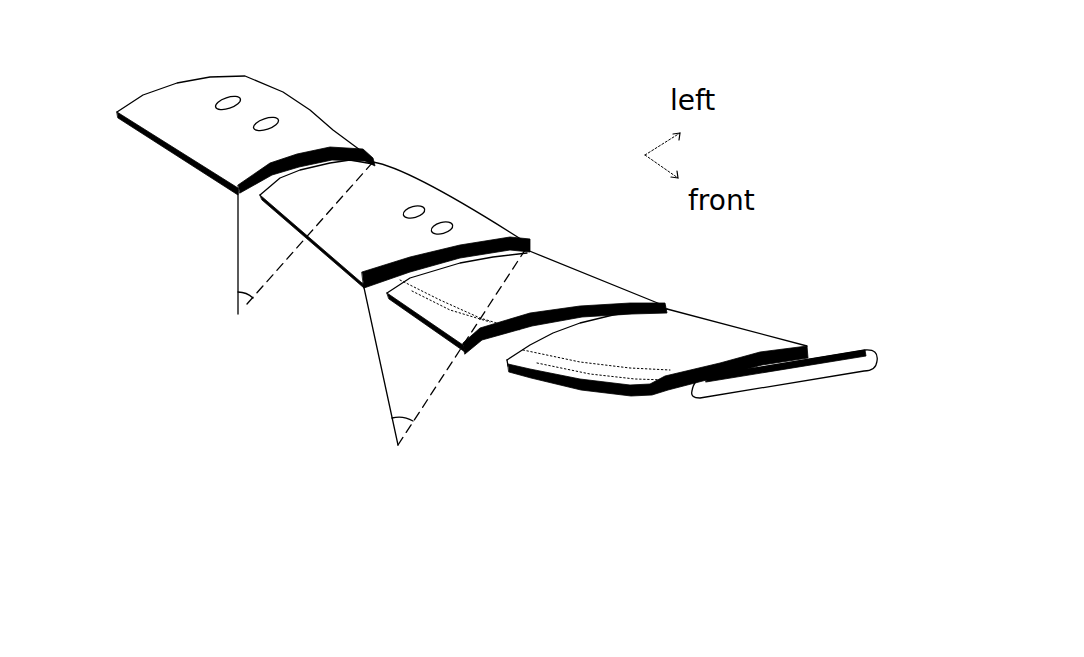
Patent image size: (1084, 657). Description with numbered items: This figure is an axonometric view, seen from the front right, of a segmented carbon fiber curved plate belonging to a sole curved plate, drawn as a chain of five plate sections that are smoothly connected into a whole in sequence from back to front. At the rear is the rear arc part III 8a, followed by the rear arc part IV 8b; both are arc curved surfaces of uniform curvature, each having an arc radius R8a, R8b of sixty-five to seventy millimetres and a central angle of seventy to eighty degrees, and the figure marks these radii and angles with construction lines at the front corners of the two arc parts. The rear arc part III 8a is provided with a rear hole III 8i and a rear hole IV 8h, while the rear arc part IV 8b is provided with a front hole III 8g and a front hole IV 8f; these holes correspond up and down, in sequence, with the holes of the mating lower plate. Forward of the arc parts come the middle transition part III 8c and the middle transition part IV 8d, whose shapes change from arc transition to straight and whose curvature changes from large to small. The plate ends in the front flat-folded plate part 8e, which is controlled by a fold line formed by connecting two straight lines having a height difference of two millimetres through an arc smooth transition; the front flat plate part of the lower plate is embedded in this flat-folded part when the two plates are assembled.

The rear arc part III 8a is at (180, 130).
The rear arc part IV 8b is at (316, 205).
The middle transition part III 8c is at (420, 298).
The middle transition part IV 8d is at (583, 365).
The front flat-folded plate part 8e is at (808, 365).
The front hole IV 8f is at (450, 224).
The front hole III 8g is at (416, 206).
The rear hole IV 8h is at (275, 118).
The rear hole III 8i is at (234, 96).
The arc radius of rear arc part III R8a is at (238, 281).
The arc radius of rear arc part IV R8b is at (389, 402).